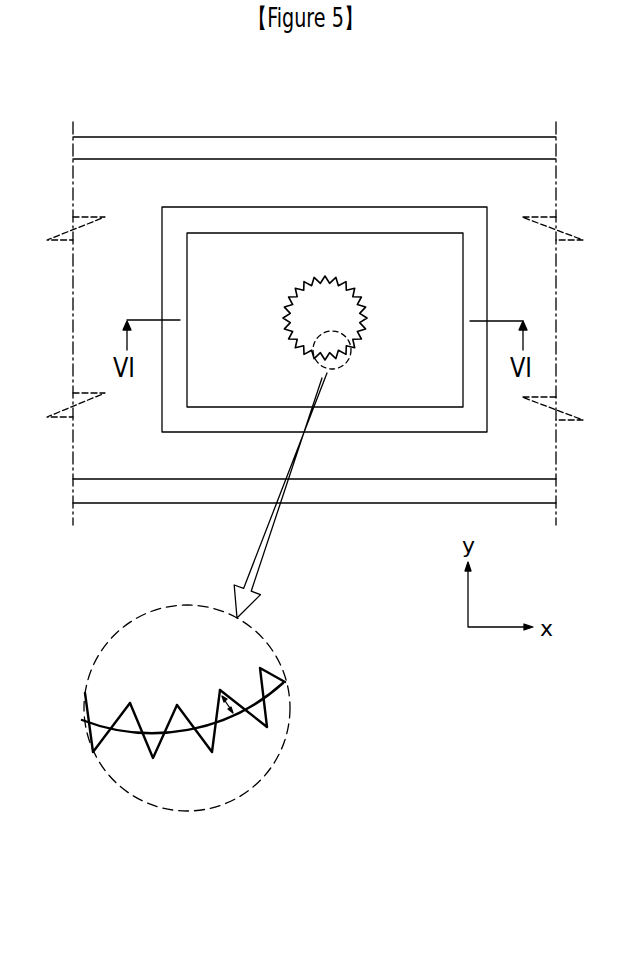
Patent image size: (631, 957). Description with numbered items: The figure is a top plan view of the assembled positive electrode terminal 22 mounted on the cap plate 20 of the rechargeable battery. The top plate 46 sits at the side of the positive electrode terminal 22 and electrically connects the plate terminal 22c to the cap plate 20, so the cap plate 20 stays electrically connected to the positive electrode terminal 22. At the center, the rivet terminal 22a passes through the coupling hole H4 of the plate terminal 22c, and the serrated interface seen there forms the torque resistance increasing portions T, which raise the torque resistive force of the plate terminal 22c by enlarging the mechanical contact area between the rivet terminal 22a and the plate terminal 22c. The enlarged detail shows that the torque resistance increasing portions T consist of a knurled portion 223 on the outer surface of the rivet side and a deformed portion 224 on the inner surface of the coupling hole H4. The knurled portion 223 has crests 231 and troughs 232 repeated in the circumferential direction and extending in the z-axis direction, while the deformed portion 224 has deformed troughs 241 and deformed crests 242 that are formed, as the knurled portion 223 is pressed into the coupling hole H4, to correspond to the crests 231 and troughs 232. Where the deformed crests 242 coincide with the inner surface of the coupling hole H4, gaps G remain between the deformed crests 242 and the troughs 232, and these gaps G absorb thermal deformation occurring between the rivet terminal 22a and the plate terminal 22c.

The cap plate 20 is at (444, 176).
The positive electrode terminal 22 is at (176, 183).
The rivet terminal 22a is at (313, 335).
The plate terminal 22c is at (310, 242).
The top plate 46 is at (379, 216).
The torque resistance increasing portions T is at (281, 294).
The coupling hole H4 is at (340, 287).
The gaps G is at (232, 703).
The knurled portion 223 is at (329, 790).
The deformed portion 224 is at (281, 795).
The crests 231 is at (217, 697).
The troughs 232 is at (183, 710).
The deformed troughs 241 is at (148, 743).
The deformed crests 242 is at (92, 723).